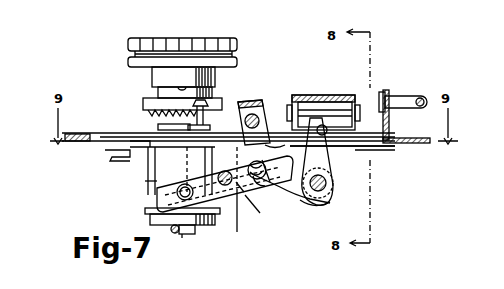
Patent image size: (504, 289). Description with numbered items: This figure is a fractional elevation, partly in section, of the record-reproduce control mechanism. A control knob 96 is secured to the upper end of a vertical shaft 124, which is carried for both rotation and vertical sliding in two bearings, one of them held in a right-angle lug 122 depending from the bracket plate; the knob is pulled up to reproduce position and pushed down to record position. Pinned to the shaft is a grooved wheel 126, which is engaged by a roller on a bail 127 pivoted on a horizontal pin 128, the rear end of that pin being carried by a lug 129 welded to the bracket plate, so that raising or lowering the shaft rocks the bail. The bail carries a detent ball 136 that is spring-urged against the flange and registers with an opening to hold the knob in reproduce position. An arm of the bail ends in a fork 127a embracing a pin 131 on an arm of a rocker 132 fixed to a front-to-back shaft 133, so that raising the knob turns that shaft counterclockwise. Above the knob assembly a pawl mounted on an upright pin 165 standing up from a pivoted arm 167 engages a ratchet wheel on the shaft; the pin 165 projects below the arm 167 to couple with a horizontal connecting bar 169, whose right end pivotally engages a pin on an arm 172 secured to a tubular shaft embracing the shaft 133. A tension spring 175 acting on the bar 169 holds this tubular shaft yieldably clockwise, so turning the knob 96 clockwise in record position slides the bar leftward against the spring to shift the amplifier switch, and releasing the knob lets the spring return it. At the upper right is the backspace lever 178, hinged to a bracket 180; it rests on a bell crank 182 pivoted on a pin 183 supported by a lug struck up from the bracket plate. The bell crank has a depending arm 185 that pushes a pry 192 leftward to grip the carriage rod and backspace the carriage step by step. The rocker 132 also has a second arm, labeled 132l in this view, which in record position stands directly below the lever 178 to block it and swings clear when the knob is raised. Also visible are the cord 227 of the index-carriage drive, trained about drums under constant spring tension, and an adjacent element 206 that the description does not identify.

The control knob 96 is at (128, 45).
The upright pin 165 is at (148, 112).
The arm 167 is at (158, 124).
The tension spring 175 is at (110, 156).
The bell crank 182 is at (244, 102).
The pin 183 is at (249, 114).
The pin 131 is at (283, 142).
The backspace lever 178 is at (322, 95).
The pin 206 is at (408, 102).
The cord 227 is at (386, 96).
The bracket 180 is at (388, 124).
The connecting bar 169 is at (359, 146).
The link portion 132l is at (383, 152).
The arm 172 is at (330, 167).
The shaft 133 is at (337, 185).
The rocker 132 is at (328, 198).
The bail 127 is at (157, 198).
The grooved wheel 126 is at (150, 183).
The depending arm 185 is at (264, 196).
The fork 127a is at (288, 192).
The lug 129 is at (252, 202).
The pry 192 is at (254, 217).
The right-angle lug 122 is at (145, 212).
The ball 136 is at (174, 232).
The shaft 124 is at (187, 240).
The horizontal pin 128 is at (238, 230).